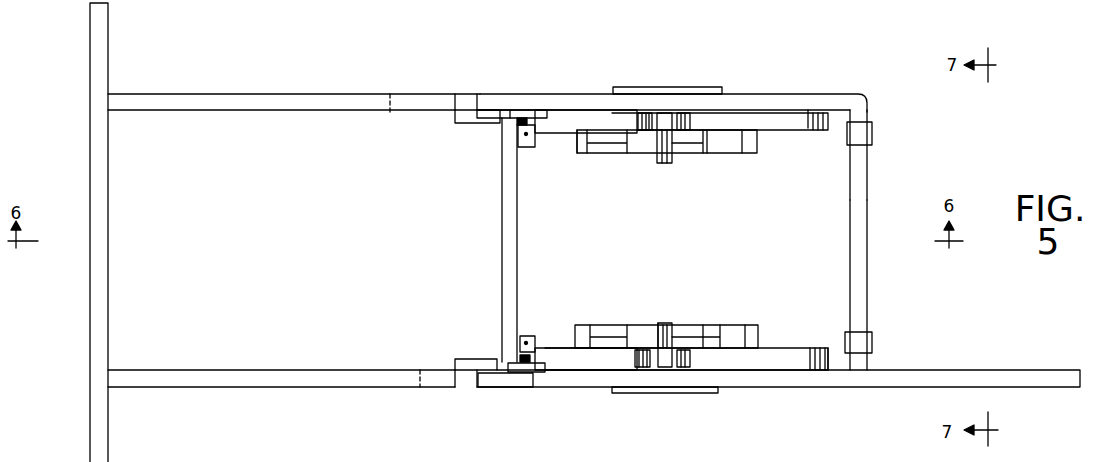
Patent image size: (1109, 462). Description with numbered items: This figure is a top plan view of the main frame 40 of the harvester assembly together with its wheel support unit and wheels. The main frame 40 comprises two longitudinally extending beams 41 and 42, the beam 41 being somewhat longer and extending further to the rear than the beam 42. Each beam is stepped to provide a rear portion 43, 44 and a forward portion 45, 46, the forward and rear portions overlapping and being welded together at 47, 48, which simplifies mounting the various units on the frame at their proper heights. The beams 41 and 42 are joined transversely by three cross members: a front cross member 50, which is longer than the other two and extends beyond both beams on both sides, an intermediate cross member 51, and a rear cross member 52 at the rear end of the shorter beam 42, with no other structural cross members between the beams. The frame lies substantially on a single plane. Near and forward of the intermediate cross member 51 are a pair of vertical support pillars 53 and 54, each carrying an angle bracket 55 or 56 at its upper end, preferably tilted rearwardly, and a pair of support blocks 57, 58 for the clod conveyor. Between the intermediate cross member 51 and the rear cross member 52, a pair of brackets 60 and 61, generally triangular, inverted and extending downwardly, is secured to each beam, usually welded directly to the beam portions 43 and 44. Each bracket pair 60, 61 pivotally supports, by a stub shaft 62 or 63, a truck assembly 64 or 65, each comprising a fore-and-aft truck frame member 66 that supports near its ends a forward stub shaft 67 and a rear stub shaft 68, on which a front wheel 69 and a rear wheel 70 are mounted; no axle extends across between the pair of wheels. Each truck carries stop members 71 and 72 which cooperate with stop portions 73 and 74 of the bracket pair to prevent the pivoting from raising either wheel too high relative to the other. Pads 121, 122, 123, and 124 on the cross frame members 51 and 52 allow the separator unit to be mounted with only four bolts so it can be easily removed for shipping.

The main frame 40 is at (799, 60).
The longitudinally extending beam 41 is at (602, 391).
The longitudinally extending beam 42 is at (557, 104).
The rear portion 43 is at (867, 380).
The rear portion 44 is at (838, 103).
The forward portion 45 is at (264, 380).
The forward portion 46 is at (283, 103).
The weld 47 is at (418, 393).
The weld 48 is at (408, 106).
The front cross member 50 is at (91, 357).
The intermediate cross member 51 is at (502, 268).
The rear cross member 52 is at (867, 306).
The vertical support pillar 53 is at (466, 381).
The vertical support pillar 54 is at (462, 105).
The angle bracket 55 is at (490, 358).
The angle bracket 56 is at (483, 123).
The support block 57 is at (530, 374).
The support block 58 is at (531, 111).
The bracket 60 is at (646, 90).
The bracket 61 is at (703, 113).
The stub shaft 62 is at (667, 337).
The stub shaft 63 is at (662, 158).
The truck assembly 64 is at (694, 321).
The truck assembly 65 is at (699, 163).
The truck frame member 66 is at (723, 141).
The forward stub shaft 67 is at (580, 143).
The rear stub shaft 68 is at (753, 143).
The front wheel 69 is at (565, 124).
The rear wheel 70 is at (805, 128).
The stop member 71 is at (638, 166).
The stop portion 73 is at (653, 131).
The stop member 72 is at (704, 383).
The stop portion 74 is at (683, 394).
The pad 121 is at (528, 335).
The pad 122 is at (525, 147).
The pad 123 is at (873, 343).
The pad 124 is at (860, 135).